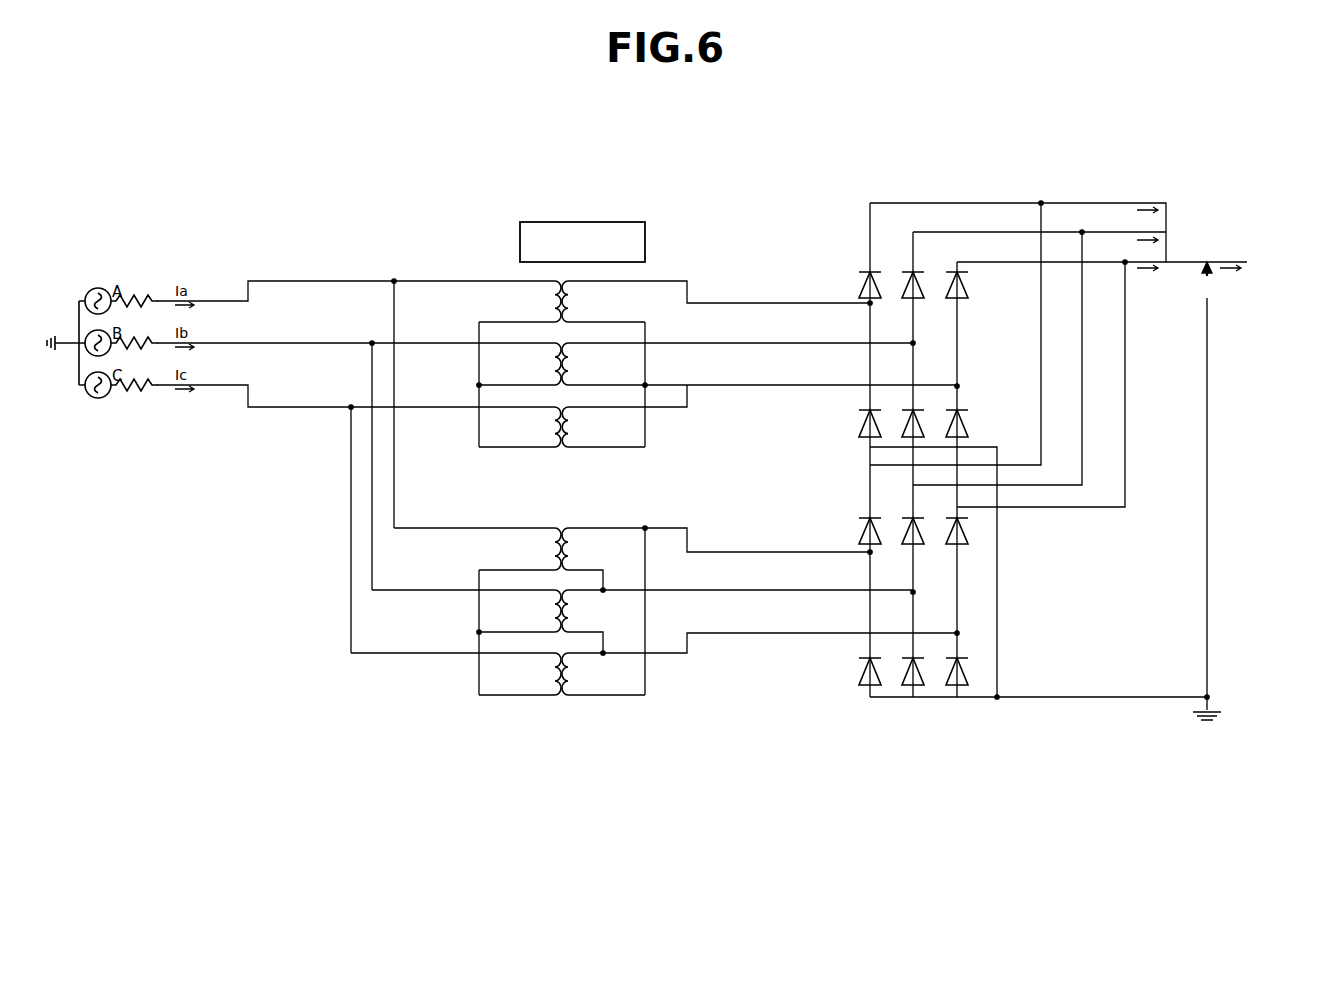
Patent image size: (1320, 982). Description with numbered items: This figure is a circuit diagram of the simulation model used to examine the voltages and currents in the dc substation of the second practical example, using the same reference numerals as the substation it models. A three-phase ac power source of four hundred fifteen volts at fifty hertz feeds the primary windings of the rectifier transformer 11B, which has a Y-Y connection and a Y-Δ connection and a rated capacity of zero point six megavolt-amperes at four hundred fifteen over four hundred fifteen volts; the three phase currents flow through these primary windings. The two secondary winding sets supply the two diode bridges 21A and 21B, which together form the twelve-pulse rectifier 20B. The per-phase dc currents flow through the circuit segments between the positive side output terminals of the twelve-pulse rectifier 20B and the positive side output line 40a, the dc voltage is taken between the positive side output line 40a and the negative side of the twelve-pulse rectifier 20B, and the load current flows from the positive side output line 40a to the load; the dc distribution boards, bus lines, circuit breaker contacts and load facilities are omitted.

The rectifier transformer 11B is at (449, 274).
The 12-pulse rectifier 20B is at (1010, 520).
The first rectifier 21A is at (856, 300).
The second rectifier 21B is at (856, 545).
The positive side output line 40a is at (1182, 262).